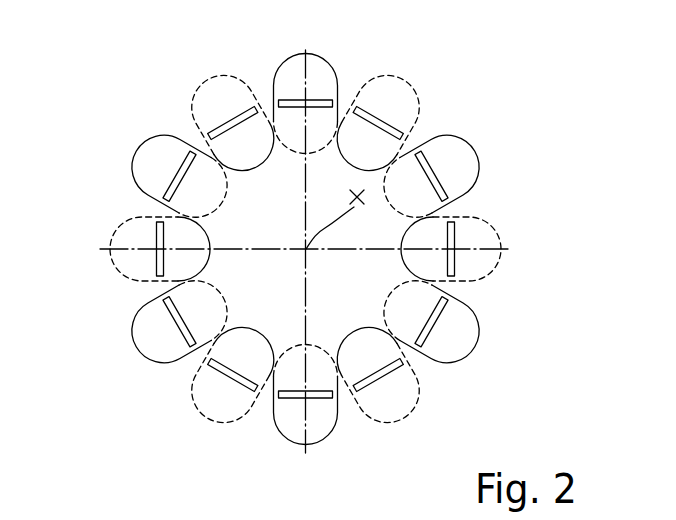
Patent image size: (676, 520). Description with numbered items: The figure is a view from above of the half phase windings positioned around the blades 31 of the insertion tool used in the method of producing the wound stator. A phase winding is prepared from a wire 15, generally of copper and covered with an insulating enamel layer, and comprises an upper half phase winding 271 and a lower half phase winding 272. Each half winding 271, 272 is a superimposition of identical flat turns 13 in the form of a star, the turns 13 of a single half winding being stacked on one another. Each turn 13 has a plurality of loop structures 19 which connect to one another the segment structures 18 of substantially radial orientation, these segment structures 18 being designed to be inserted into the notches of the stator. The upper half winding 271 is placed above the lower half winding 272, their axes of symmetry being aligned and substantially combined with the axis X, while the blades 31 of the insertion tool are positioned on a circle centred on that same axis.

The undulating turn 13 is at (218, 77).
The wire 15 is at (400, 290).
The segment structure 18 is at (131, 284).
The loop structure 19 is at (209, 235).
The blade 31 is at (458, 222).
The upper half phase winding 271 is at (478, 150).
The lower half phase winding 272 is at (410, 83).